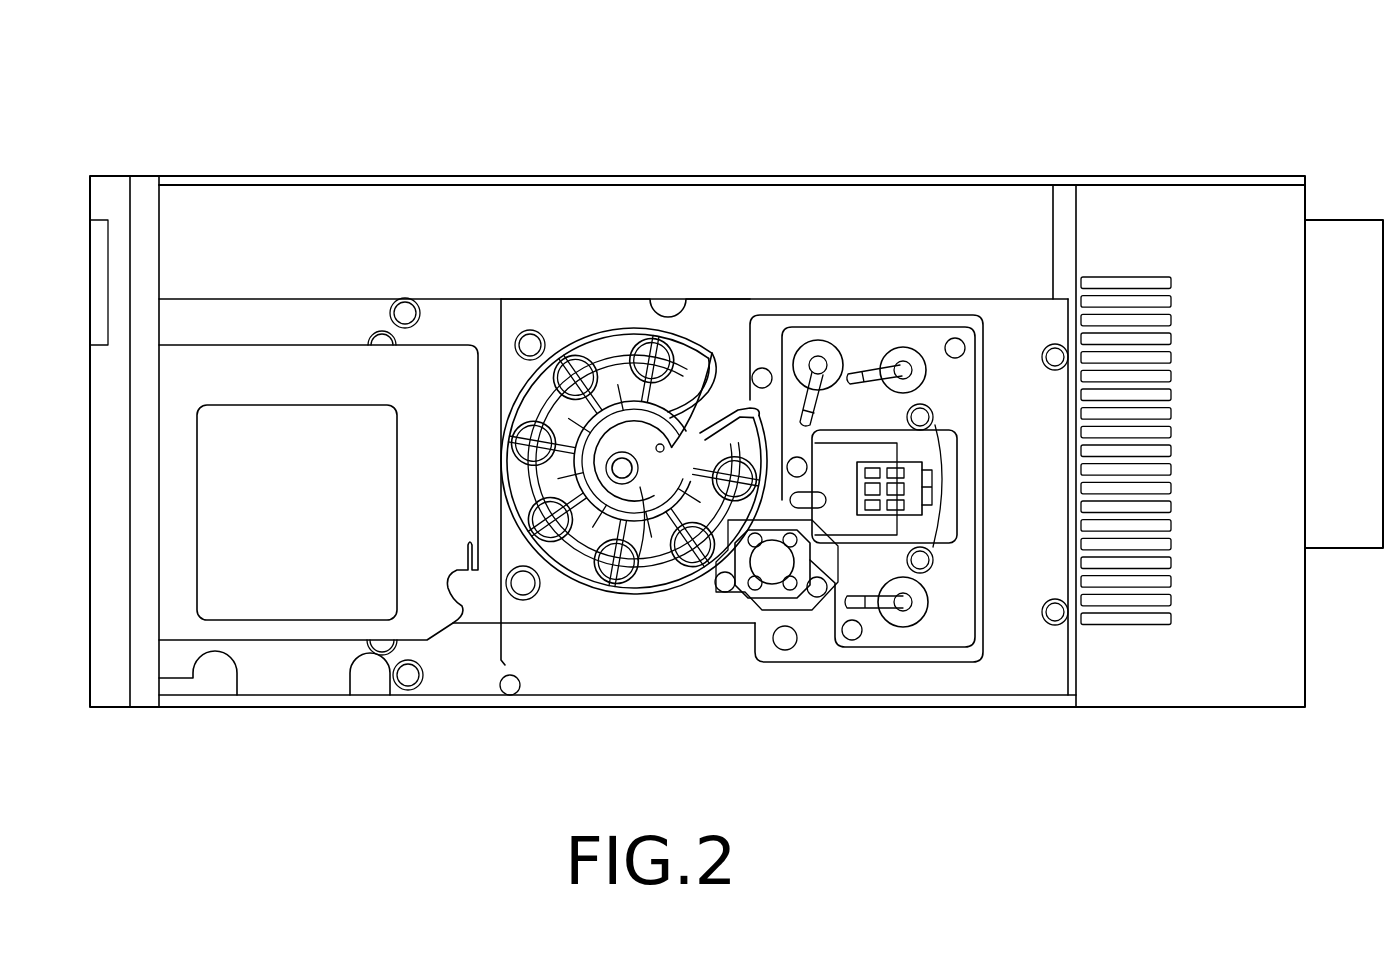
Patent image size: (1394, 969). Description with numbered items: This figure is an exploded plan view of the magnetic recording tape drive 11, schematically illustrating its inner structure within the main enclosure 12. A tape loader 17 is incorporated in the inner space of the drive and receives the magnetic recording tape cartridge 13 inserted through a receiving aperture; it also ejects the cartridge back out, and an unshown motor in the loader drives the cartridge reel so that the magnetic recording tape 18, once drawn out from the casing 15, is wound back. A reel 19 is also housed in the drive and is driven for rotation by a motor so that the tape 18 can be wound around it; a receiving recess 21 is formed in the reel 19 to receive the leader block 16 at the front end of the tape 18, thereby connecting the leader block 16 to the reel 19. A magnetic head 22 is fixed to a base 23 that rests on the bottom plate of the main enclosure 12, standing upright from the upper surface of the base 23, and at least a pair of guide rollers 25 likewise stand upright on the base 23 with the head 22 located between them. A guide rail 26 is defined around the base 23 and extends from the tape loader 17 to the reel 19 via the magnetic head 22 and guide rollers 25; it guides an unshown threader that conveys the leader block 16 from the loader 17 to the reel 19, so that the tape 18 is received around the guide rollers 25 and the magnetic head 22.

The magnetic recording tape drive 11 is at (377, 137).
The main enclosure 12 is at (238, 176).
The magnetic recording tape cartridge 13 is at (290, 347).
The casing 15 is at (492, 338).
The leader block 16 is at (623, 470).
The tape loader 17 is at (285, 695).
The magnetic recording tape 18 is at (478, 626).
The reel 19 is at (580, 336).
The receiving recess 21 is at (640, 490).
The magnetic head 22 is at (937, 492).
The base 23 is at (984, 656).
The guide rollers 25 is at (881, 597).
The guide rail 26 is at (975, 492).